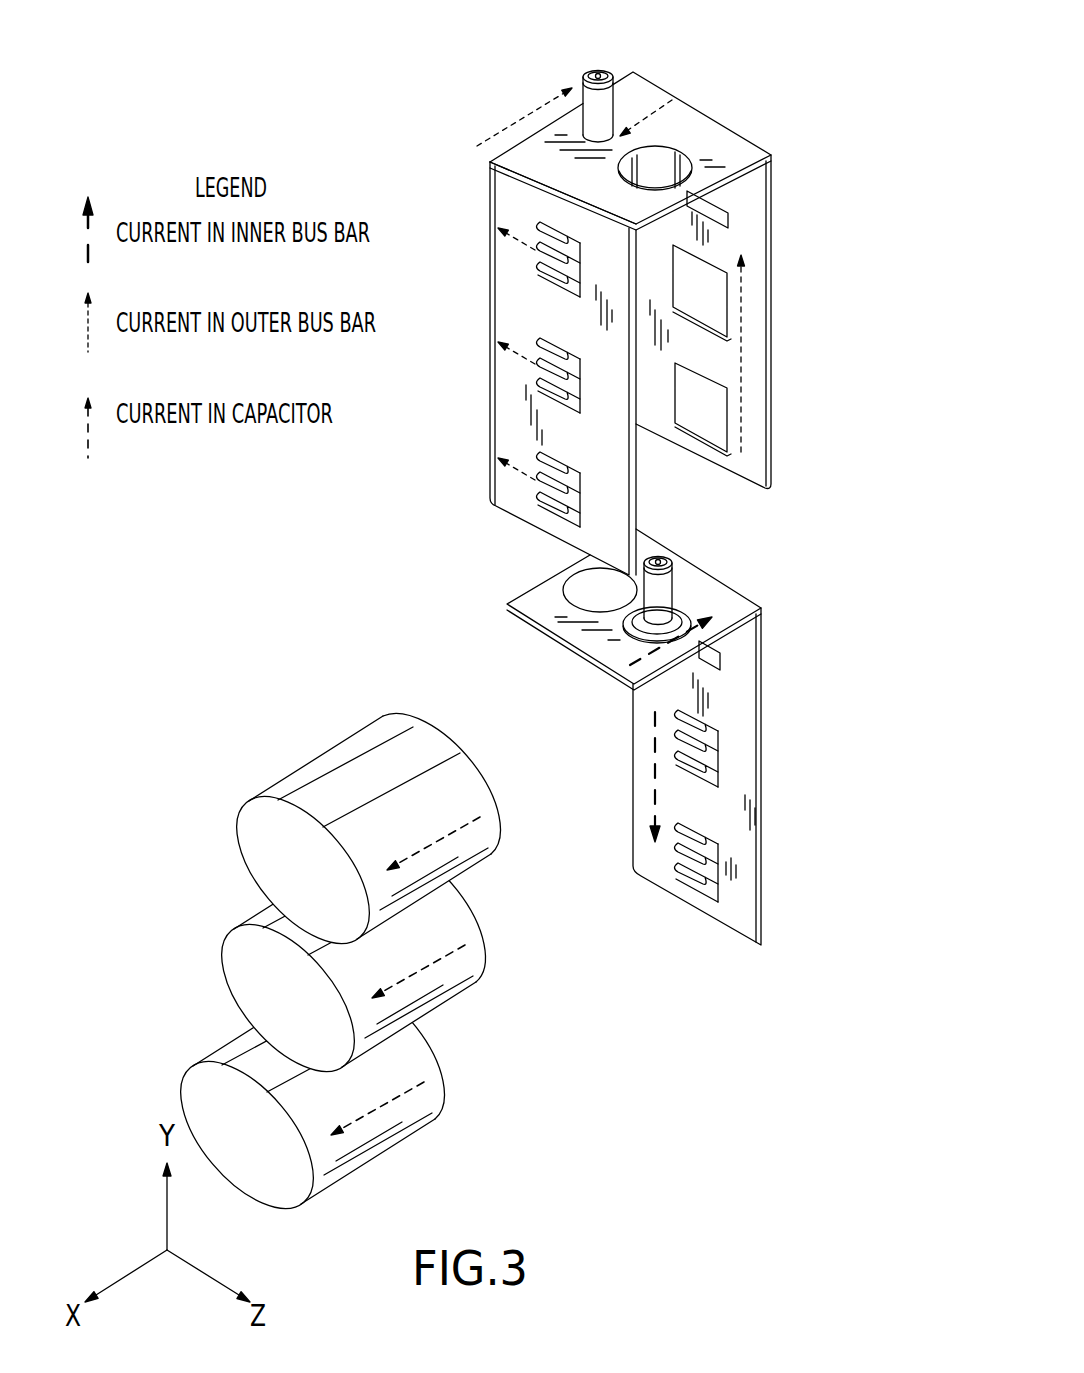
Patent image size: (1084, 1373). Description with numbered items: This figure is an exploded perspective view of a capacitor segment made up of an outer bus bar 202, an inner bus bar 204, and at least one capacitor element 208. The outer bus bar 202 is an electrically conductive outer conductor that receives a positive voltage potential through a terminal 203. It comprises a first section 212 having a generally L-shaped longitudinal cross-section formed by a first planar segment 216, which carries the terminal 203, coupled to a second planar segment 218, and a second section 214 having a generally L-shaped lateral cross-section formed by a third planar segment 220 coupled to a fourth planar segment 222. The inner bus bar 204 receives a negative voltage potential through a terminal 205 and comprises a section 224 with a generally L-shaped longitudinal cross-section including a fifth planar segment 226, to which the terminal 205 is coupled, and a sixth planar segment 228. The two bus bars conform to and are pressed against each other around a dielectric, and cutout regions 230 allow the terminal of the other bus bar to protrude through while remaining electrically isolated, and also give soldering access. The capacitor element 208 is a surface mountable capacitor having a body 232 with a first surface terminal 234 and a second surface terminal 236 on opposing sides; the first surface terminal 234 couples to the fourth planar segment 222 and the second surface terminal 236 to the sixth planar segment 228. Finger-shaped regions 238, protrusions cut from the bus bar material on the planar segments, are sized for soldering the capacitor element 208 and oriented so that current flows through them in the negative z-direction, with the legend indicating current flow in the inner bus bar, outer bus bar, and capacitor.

The outer bus bar 202 is at (641, 287).
The terminal 203 is at (598, 72).
The inner bus bar 204 is at (719, 704).
The terminal 205 is at (664, 560).
The capacitor element 208 is at (324, 922).
The first section 212 is at (767, 322).
The second section 214 is at (509, 329).
The first planar segment 216 is at (643, 95).
The second planar segment 218 is at (753, 202).
The third planar segment 220 is at (497, 158).
The fourth planar segment 222 is at (507, 280).
The section 224 is at (782, 776).
The fifth planar segment 226 is at (657, 592).
The sixth planar segment 228 is at (757, 912).
The cutout regions 230 is at (683, 163).
The body 232 is at (328, 812).
The first surface terminal 234 is at (258, 834).
The second surface terminal 236 is at (455, 735).
The finger-shaped regions 238 is at (560, 258).